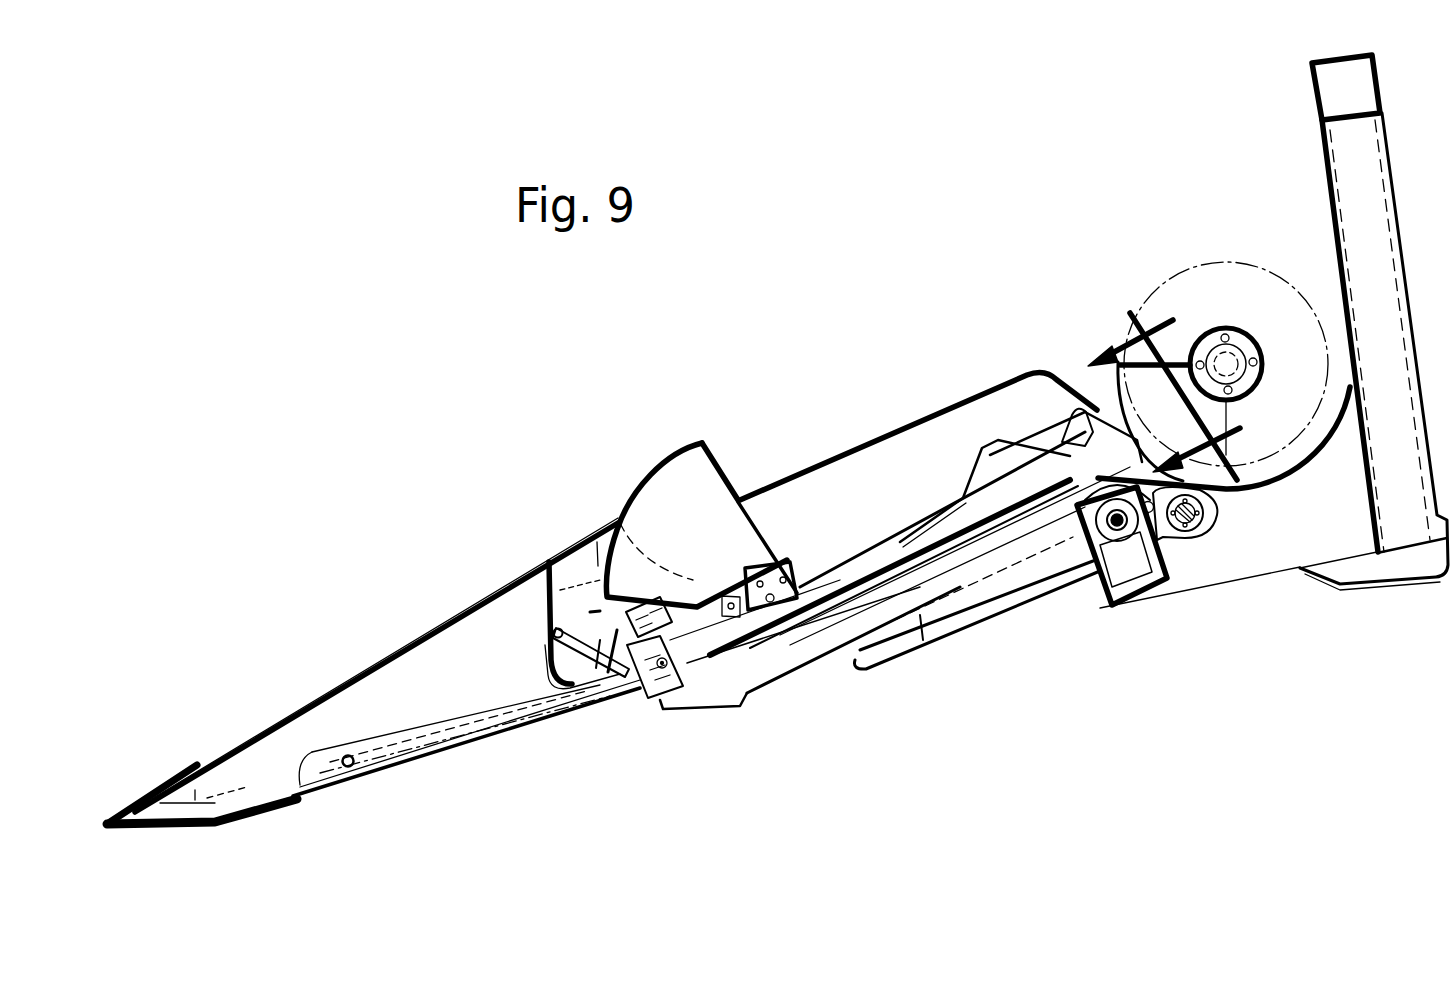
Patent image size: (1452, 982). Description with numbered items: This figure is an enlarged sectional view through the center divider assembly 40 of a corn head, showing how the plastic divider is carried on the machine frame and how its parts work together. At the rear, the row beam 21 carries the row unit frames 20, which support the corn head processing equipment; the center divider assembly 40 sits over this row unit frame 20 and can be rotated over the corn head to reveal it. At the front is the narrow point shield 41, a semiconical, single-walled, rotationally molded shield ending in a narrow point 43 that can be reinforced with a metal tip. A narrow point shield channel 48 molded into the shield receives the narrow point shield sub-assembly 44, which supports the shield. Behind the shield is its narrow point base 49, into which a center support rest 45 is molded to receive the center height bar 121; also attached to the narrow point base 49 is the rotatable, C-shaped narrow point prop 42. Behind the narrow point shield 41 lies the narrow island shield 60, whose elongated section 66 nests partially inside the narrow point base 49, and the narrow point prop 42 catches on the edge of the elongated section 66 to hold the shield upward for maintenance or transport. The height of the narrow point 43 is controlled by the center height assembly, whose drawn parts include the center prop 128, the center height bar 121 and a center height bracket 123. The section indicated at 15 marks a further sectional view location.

The hub flange / section line 15- 15 is at (1219, 375).
The row unit frame 20 is at (957, 600).
The row beam 21 is at (1140, 600).
The center divider assembly 40 is at (405, 560).
The narrow point shield 41 is at (313, 703).
The narrow point prop 42 is at (597, 552).
The narrow point 43 is at (130, 818).
The narrow point shield sub-assembly 44 is at (348, 768).
The center support rest 45 is at (557, 620).
The narrow point shield channel 48 is at (418, 737).
The narrow point base 49 is at (622, 640).
The narrow island shield 60 is at (852, 447).
The elongated section 66 is at (702, 443).
The center height bar 121 is at (573, 703).
The center height bracket 123 is at (662, 706).
The center prop 128 is at (1013, 443).